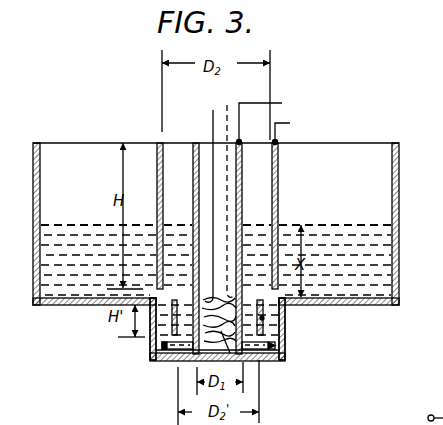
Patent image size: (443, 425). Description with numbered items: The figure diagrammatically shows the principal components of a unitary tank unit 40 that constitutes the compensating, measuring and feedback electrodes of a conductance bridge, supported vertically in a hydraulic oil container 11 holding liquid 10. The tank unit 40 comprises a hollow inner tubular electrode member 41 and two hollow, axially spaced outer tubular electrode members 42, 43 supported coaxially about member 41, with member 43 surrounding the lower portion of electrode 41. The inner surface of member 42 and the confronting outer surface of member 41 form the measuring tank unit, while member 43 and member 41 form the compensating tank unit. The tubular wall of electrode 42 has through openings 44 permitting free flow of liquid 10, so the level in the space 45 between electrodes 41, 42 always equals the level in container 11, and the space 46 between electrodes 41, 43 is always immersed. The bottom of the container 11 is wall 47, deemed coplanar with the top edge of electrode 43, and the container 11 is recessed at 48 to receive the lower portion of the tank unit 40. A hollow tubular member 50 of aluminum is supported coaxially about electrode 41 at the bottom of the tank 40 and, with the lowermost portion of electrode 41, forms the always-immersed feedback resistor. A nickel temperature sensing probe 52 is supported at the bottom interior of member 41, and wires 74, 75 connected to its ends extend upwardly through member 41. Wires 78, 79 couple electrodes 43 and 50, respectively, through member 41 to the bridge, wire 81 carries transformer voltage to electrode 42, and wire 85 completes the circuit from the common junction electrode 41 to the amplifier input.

The liquid 10 is at (380, 268).
The hydraulic oil container 11 is at (399, 250).
The unitary tank unit 40 is at (239, 216).
The inner tubular electrode member 41 is at (242, 173).
The outer tubular electrode member 42 is at (277, 208).
The outer tubular electrode member 43 is at (172, 325).
The through openings 44 is at (158, 188).
The space 45 is at (175, 246).
The space 46 is at (262, 328).
The wall 47 is at (375, 302).
The recess 48 is at (285, 352).
The hollow tubular member 50 is at (157, 360).
The temperature sensing probe 52 is at (259, 360).
The wire 74 is at (212, 121).
The wire 75 is at (227, 103).
The wire 78 is at (262, 318).
The wire 79 is at (273, 345).
The wire 81 is at (290, 123).
The wire 85 is at (282, 103).